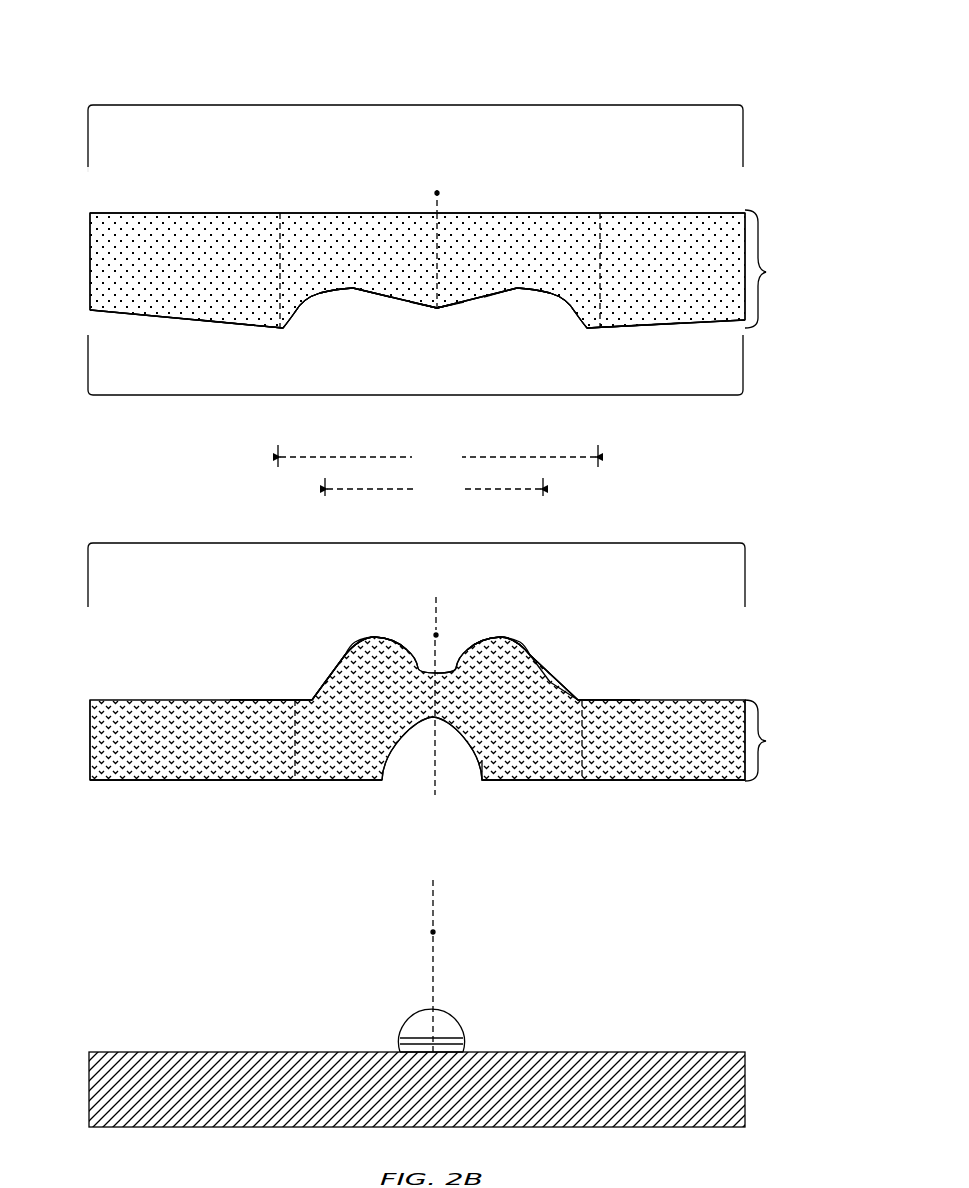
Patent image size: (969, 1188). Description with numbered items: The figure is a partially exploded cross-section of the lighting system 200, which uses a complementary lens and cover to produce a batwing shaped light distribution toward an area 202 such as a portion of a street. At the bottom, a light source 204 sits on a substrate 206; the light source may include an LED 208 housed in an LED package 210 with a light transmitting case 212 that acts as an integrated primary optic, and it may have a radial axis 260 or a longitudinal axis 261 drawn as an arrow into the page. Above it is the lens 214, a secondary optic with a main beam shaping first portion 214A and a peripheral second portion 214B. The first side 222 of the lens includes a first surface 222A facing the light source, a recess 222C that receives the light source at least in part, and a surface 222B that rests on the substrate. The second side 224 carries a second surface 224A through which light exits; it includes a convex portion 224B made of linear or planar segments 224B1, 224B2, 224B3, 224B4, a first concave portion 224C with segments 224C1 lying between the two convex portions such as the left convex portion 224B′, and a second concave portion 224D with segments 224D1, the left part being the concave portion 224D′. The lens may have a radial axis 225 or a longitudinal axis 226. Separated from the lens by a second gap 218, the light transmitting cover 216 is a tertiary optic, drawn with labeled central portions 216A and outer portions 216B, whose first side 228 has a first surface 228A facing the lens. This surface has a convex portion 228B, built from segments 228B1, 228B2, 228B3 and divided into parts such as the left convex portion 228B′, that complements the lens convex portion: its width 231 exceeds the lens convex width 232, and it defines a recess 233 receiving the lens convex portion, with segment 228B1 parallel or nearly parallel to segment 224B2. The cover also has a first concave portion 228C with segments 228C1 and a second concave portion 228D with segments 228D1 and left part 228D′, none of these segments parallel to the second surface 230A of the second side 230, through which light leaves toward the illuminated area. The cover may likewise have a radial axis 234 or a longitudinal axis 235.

The lighting system 200 is at (748, 58).
The area 202 is at (158, 49).
The light source 204 is at (440, 1003).
The substrate 206 is at (89, 1073).
The LED 208 is at (470, 1038).
The LED package 210 is at (452, 1015).
The case 212 is at (462, 1035).
The lens 214 is at (90, 700).
The first portion 214A is at (359, 748).
The second portion 214B is at (205, 748).
The light transmitting cover 216 is at (90, 258).
The central portion of upper lens body 216A is at (396, 256).
The outer portion of upper lens body 216B is at (207, 256).
The second gap 218 is at (120, 472).
The first side 222 is at (441, 762).
The first surface 222A is at (393, 745).
The surface 222B is at (205, 782).
The recess 222C is at (452, 783).
The second side 224 is at (552, 709).
The second surface 224A is at (408, 543).
The convex portion 224B is at (437, 610).
The convex portion 224B′ is at (397, 567).
The linear and/or planar segment 224B1 is at (398, 642).
The linear and/or planar segment 224B2 is at (352, 637).
The linear and/or planar segment 224B3 is at (343, 643).
The linear and/or planar segment 224B4 is at (340, 656).
The first concave portion 224C is at (427, 630).
The linear and/or planar segment 224C1 is at (437, 661).
The second concave portion 224D is at (272, 668).
The concave portion 224D′ is at (276, 687).
The linear and/or planar segment 224D1 is at (331, 662).
The radial axis 225 is at (454, 608).
The longitudinal axis 226 is at (436, 611).
The first side 228 is at (441, 306).
The first surface 228A is at (416, 395).
The convex portion 228B is at (435, 338).
The convex portion 228B′ is at (397, 383).
The linear and/or planar segment 228B1 is at (435, 313).
The linear and/or planar segment 228B2 is at (393, 294).
The linear and/or planar segment 228B3 is at (300, 302).
The first concave portion 228C is at (442, 335).
The linear and/or planar segment 228C1 is at (453, 319).
The second concave portion 228D is at (268, 368).
The concave portion 228D′ is at (268, 352).
The linear and/or planar segment 228D1 is at (283, 331).
The second side 230 is at (441, 269).
The second surface 230A is at (442, 105).
The width 231 is at (424, 446).
The width 232 is at (426, 478).
The recess 233 is at (409, 338).
The radial axis 234 is at (440, 162).
The longitudinal axis 235 is at (441, 194).
The radial axis 260 is at (453, 903).
The longitudinal axis 261 is at (436, 925).